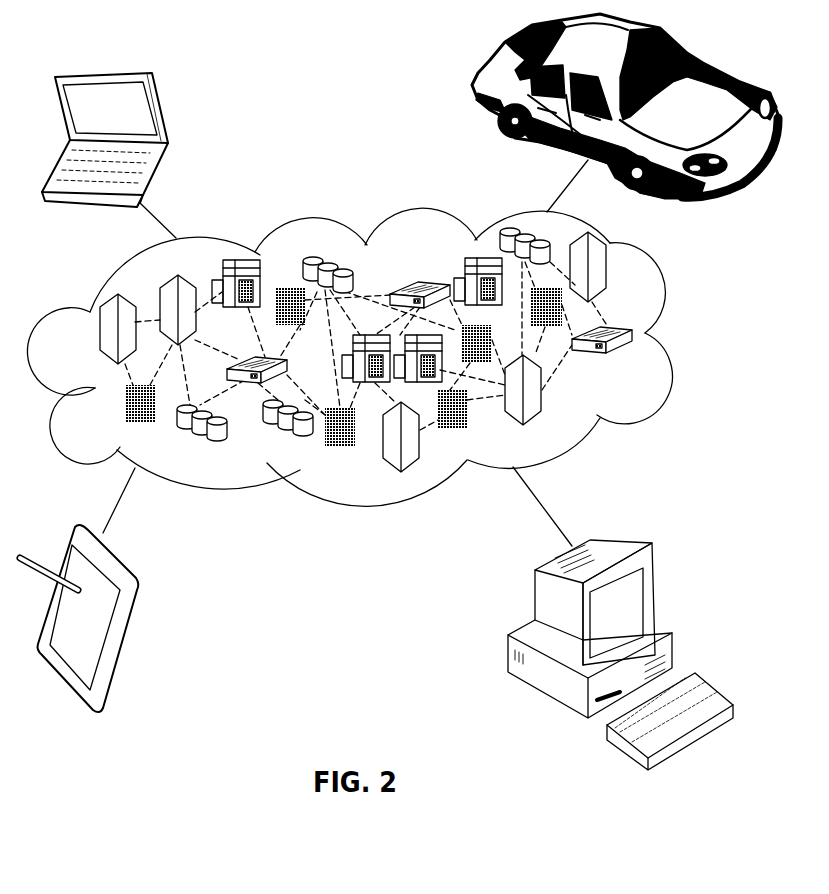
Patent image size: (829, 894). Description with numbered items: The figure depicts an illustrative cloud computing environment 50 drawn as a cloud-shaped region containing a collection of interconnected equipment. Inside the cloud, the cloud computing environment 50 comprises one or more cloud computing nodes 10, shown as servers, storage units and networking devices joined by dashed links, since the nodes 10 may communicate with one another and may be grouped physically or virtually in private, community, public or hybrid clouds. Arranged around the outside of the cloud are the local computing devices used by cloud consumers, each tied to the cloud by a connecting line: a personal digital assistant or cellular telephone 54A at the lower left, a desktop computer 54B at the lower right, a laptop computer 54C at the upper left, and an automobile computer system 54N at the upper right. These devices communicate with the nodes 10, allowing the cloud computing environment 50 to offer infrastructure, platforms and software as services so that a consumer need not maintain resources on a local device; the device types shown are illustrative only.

The cloud computing node 10 is at (640, 360).
The cloud computing environment 50 is at (683, 338).
The personal digital assistant (PDA) or cellular telephone 54A is at (135, 612).
The desktop computer 54B is at (627, 540).
The laptop computer 54C is at (166, 115).
The automobile computer system 54N is at (477, 88).